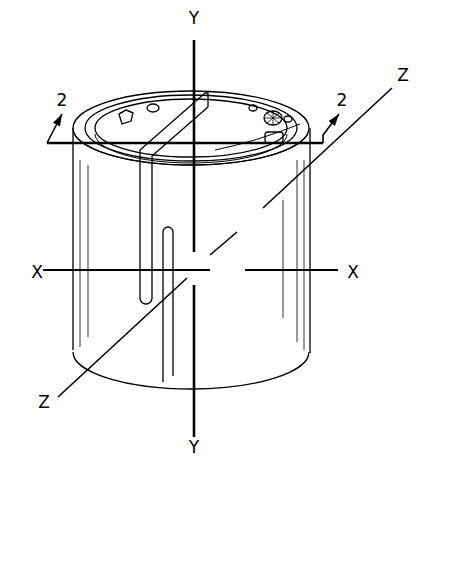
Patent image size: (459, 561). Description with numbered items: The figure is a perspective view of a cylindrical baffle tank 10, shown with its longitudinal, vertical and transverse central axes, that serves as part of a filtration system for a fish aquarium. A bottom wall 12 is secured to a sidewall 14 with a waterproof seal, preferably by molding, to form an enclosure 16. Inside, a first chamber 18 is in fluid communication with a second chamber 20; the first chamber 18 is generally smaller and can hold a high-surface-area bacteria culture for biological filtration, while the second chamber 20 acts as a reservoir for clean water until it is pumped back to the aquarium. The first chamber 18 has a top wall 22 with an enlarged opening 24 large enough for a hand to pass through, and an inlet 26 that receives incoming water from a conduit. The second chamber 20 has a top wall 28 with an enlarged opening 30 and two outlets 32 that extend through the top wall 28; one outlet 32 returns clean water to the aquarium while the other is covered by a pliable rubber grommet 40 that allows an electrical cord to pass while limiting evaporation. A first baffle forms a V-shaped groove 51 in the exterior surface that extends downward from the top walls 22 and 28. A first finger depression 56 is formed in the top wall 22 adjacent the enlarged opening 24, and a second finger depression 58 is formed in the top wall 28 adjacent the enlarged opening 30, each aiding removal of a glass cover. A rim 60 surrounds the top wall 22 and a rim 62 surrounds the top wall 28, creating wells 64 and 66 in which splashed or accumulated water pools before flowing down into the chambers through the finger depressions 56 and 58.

The baffle tank 10 is at (357, 47).
The bottom wall 12 is at (275, 384).
The sidewall 14 is at (313, 233).
The enclosure 16 is at (71, 172).
The first chamber 18 is at (107, 148).
The second chamber 20 is at (228, 152).
The top wall 22 is at (138, 108).
The enlarged opening 24 is at (128, 153).
The inlet 26 is at (154, 105).
The top wall 28 is at (237, 106).
The enlarged opening 30 is at (208, 148).
The outlet 32 is at (274, 115).
The grommet 40 is at (291, 116).
The V-shaped groove 51 is at (147, 212).
The first finger depression 56 is at (122, 112).
The second finger depression 58 is at (285, 134).
The rim 60 is at (93, 110).
The rim 62 is at (162, 388).
The well 64 is at (125, 110).
The well 66 is at (225, 108).